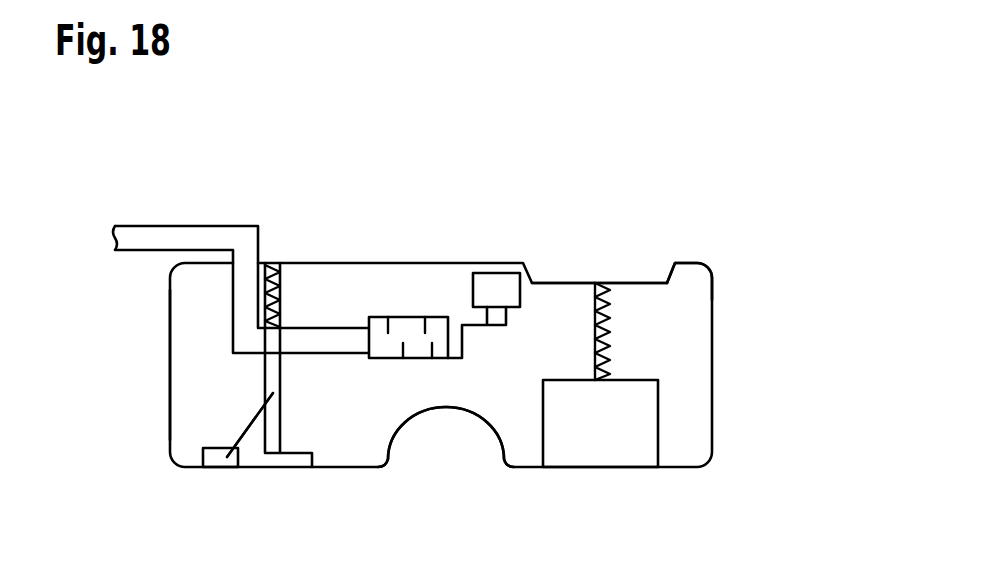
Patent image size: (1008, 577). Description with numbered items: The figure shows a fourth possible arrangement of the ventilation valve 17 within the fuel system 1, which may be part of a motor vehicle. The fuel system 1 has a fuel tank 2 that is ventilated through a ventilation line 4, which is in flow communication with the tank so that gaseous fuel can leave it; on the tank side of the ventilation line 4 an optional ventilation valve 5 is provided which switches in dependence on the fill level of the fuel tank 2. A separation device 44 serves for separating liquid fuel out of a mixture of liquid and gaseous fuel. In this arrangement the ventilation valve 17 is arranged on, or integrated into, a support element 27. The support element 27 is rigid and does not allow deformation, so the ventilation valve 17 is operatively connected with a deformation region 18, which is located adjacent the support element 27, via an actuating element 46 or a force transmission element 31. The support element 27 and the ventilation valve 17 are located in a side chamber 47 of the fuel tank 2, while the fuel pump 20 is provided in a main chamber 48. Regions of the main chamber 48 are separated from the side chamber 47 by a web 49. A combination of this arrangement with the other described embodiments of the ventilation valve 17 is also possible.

The fuel system 1 is at (754, 174).
The fuel tank 2 is at (567, 302).
The ventilation line 4 is at (176, 237).
The ventilation valve 5 is at (497, 288).
The ventilation valve 17 is at (303, 306).
The deformation region 18 is at (222, 468).
The fuel pump 20 is at (633, 446).
The support element 27 is at (282, 433).
The force transmission element 31 is at (247, 428).
The actuating element 46 is at (247, 428).
The separation device 44 is at (415, 322).
The side chamber 47 is at (188, 362).
The main chamber 48 is at (679, 298).
The web 49 is at (462, 446).